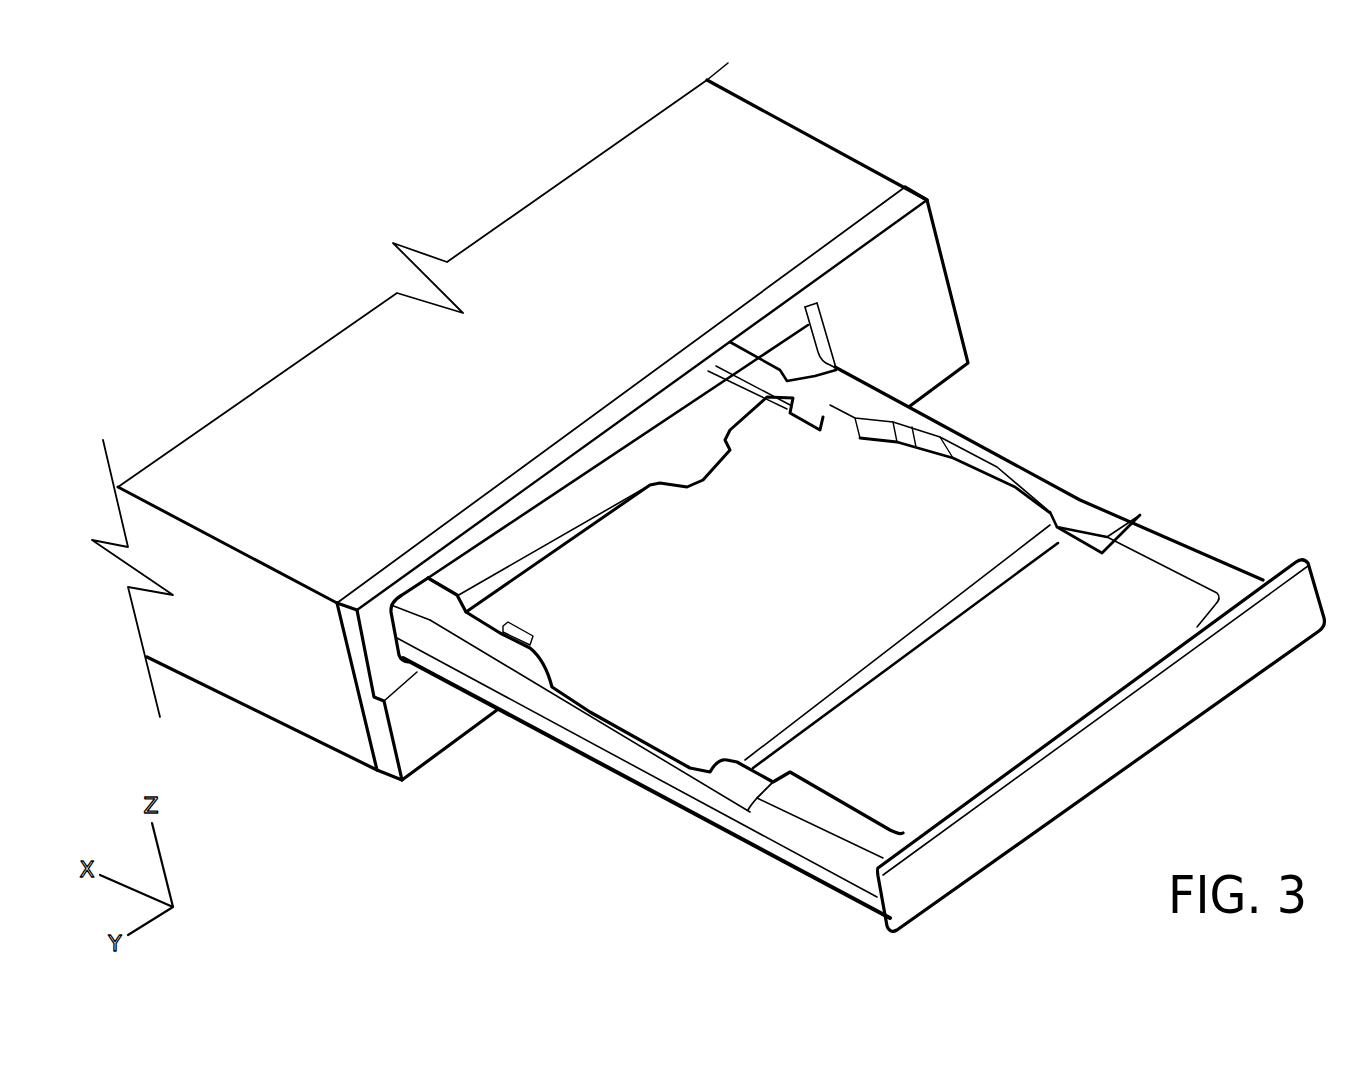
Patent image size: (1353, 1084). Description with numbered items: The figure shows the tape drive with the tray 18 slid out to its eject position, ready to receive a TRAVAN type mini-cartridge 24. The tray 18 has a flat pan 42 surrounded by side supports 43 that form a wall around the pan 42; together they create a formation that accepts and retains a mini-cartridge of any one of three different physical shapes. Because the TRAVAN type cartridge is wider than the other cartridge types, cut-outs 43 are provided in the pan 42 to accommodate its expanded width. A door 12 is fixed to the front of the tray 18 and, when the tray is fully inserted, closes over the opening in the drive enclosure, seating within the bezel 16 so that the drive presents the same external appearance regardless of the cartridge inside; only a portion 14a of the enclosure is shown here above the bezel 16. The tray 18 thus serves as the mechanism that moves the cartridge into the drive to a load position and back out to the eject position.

The door 12 is at (1153, 712).
The housing top wall 14a is at (768, 196).
The bezel 16 is at (902, 280).
The tray 18 is at (1107, 453).
The sliding plate / carrier 24 is at (690, 644).
The pan 42 is at (1060, 651).
The side supports 43 is at (1003, 482).